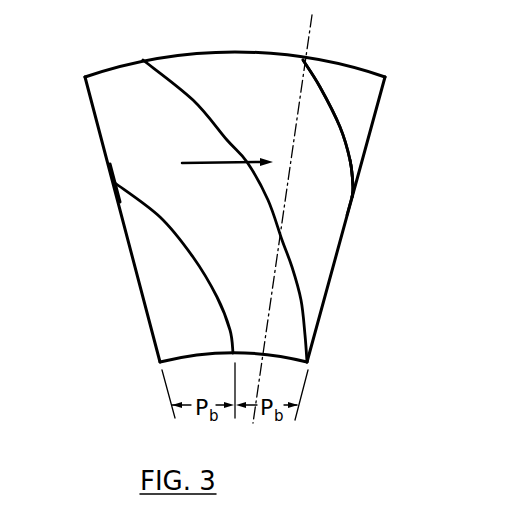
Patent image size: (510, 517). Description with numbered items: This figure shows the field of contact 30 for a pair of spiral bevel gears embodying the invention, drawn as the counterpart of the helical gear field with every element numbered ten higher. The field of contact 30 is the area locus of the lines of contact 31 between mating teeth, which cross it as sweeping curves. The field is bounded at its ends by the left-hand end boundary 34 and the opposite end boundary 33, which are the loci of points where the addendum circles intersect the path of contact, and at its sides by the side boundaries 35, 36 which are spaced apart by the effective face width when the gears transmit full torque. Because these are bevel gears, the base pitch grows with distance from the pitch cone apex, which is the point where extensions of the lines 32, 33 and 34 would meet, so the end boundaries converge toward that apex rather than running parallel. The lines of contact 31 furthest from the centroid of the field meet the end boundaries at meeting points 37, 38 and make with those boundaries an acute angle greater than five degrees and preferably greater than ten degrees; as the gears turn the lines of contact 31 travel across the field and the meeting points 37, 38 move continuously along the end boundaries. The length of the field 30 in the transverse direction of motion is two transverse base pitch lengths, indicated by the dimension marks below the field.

The field of contact 30 is at (355, 107).
The lines of contact 31 is at (340, 127).
The side boundary 32 is at (315, 24).
The end boundary 33 is at (363, 162).
The left-hand end boundary 34 is at (97, 123).
The side boundary 35 is at (355, 66).
The side boundary 36 is at (285, 355).
The meeting point 37 is at (356, 196).
The meeting point 38 is at (113, 184).